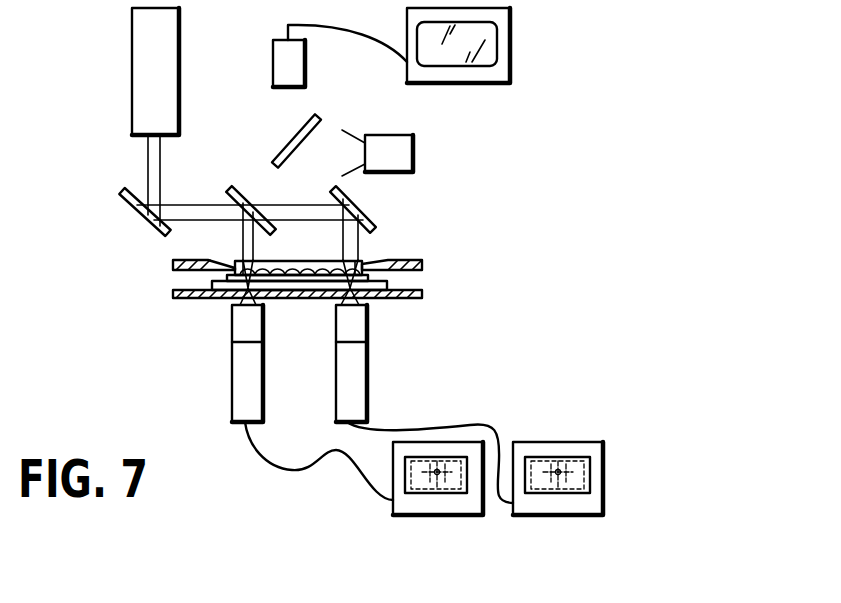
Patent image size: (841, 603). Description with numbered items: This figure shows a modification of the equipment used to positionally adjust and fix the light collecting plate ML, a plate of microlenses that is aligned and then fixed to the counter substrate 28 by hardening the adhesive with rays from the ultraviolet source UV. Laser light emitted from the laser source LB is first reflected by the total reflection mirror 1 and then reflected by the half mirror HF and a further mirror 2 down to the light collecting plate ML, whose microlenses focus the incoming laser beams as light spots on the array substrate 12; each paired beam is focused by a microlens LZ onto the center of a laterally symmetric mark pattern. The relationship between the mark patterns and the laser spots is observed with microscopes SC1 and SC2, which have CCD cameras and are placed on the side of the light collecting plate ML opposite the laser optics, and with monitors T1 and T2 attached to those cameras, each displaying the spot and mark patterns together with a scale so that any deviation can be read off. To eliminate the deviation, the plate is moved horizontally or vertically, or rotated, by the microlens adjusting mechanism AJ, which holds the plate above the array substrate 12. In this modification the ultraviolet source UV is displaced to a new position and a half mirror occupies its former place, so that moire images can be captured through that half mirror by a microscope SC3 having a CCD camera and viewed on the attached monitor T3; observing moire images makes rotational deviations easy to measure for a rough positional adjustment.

The laser source LB is at (179, 86).
The microscope SC3 is at (305, 72).
The monitor T3 is at (497, 83).
The half mirror HF is at (236, 188).
The ultraviolet source UV is at (413, 160).
The total reflection mirror 1 is at (128, 199).
The mirror 2 is at (360, 213).
The counter substrate 28 is at (374, 275).
The light collecting plate ML is at (275, 248).
The array substrate 12 is at (200, 298).
The microlens LZ is at (268, 288).
The microscope SC1 is at (232, 372).
The microscope SC2 is at (367, 390).
The monitor T1 is at (465, 512).
The monitor T2 is at (590, 512).
The microlens adjusting mechanism AJ is at (474, 282).